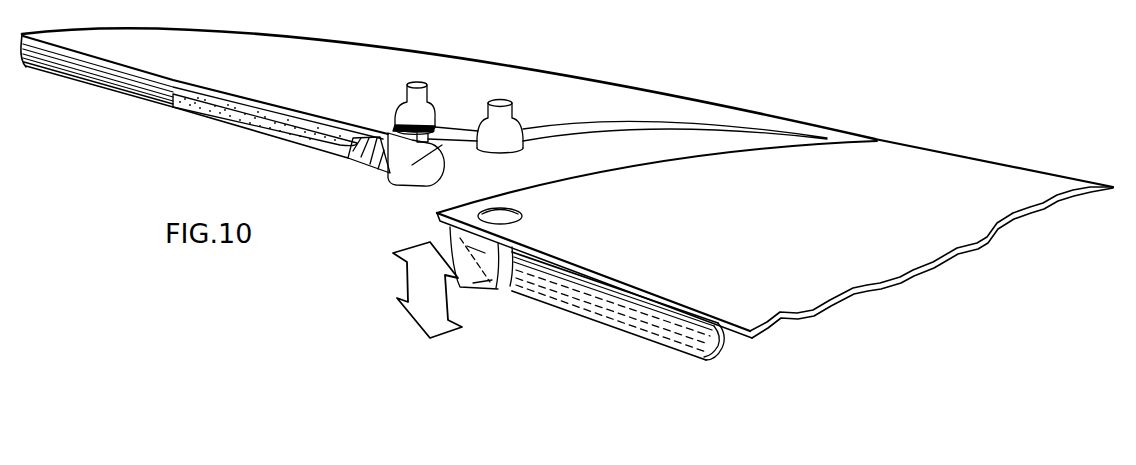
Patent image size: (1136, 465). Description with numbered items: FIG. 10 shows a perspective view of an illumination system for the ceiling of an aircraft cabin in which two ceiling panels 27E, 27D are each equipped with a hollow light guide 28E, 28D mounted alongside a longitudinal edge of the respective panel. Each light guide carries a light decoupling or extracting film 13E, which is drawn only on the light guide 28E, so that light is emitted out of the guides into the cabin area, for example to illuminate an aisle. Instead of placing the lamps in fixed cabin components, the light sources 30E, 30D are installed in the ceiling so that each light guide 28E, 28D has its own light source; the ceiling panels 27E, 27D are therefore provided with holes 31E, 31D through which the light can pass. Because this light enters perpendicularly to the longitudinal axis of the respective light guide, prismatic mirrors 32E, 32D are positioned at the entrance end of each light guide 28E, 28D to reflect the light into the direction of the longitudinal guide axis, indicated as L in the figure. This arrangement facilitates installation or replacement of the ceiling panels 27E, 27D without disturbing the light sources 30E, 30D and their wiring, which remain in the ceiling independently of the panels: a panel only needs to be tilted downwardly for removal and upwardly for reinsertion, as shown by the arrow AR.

The ceiling panel 27E is at (340, 89).
The hollow light guide 28E is at (97, 75).
The light decoupling or extracting film 13E is at (225, 108).
The hole 31E is at (367, 152).
The prismatic mirror 32E is at (402, 162).
The light source 30E is at (425, 115).
The light source 30D is at (512, 130).
The ceiling panel 27D is at (835, 234).
The hole 31D is at (522, 217).
The prismatic mirror 32D is at (480, 292).
The hollow light guide 28D is at (598, 313).
The longitudinal direction L is at (432, 227).
The arrow AR is at (428, 307).